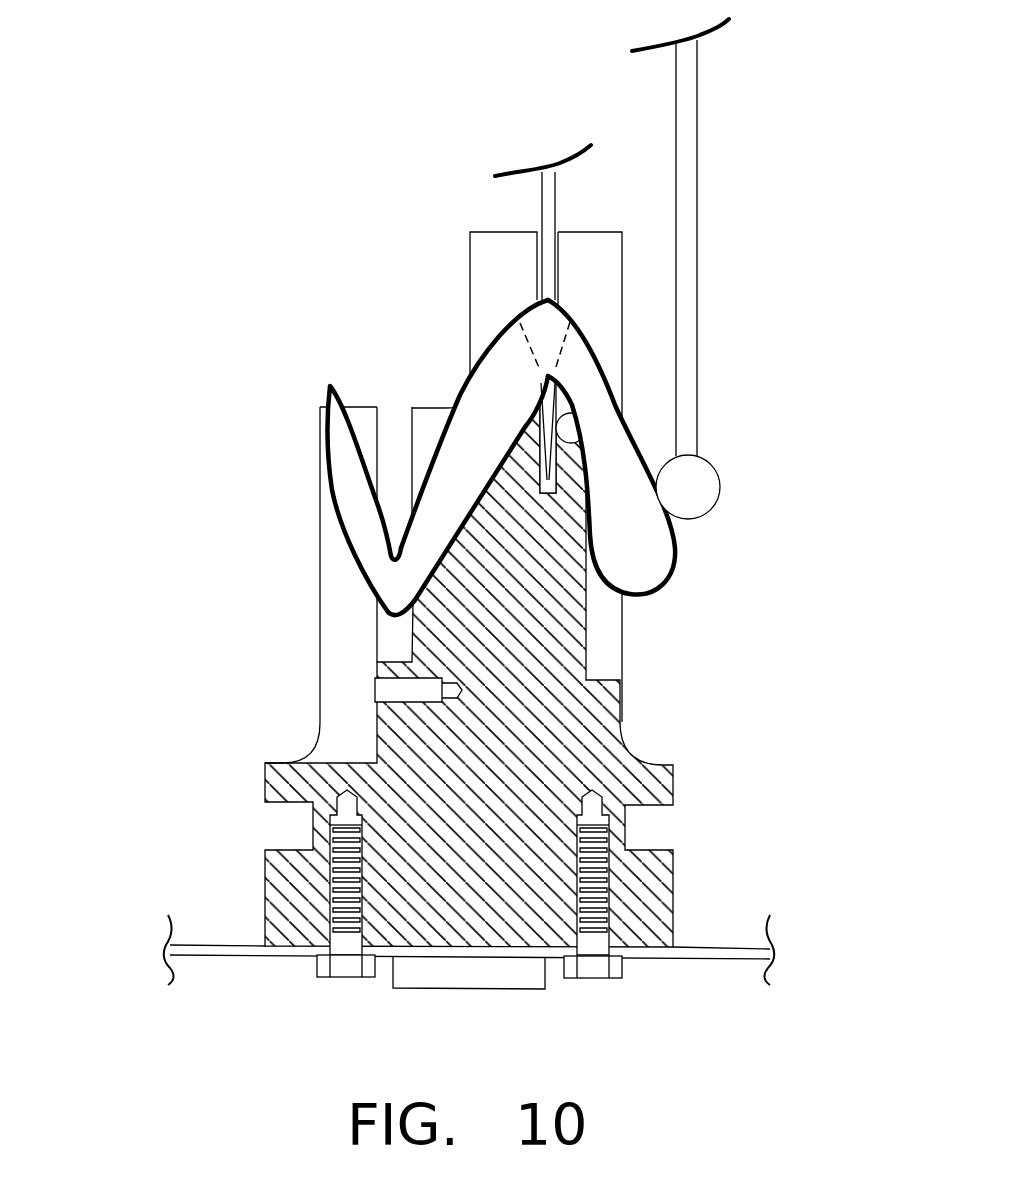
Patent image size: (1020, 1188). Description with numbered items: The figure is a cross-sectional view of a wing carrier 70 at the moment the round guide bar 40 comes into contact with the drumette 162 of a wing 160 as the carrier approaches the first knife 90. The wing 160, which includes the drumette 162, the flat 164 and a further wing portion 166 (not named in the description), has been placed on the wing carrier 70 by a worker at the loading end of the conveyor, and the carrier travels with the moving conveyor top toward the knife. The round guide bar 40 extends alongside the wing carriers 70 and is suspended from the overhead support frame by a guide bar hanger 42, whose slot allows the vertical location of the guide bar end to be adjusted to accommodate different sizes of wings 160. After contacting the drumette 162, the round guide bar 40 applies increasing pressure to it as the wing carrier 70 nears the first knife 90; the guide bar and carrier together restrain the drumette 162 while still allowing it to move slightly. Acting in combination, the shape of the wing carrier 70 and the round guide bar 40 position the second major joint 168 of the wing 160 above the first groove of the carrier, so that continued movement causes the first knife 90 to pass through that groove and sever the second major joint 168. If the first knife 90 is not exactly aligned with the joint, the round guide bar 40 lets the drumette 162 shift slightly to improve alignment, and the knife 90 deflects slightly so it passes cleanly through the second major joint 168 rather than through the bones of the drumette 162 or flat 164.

The wing carrier 70 is at (407, 610).
The first knife 90 is at (439, 305).
The guide bar hanger 42 is at (751, 237).
The round guide bar 40 is at (769, 513).
The wing 160 is at (503, 446).
The drumette 162 is at (710, 488).
The flat 164 is at (404, 457).
The left tine 166 is at (268, 495).
The second major joint 168 is at (683, 368).